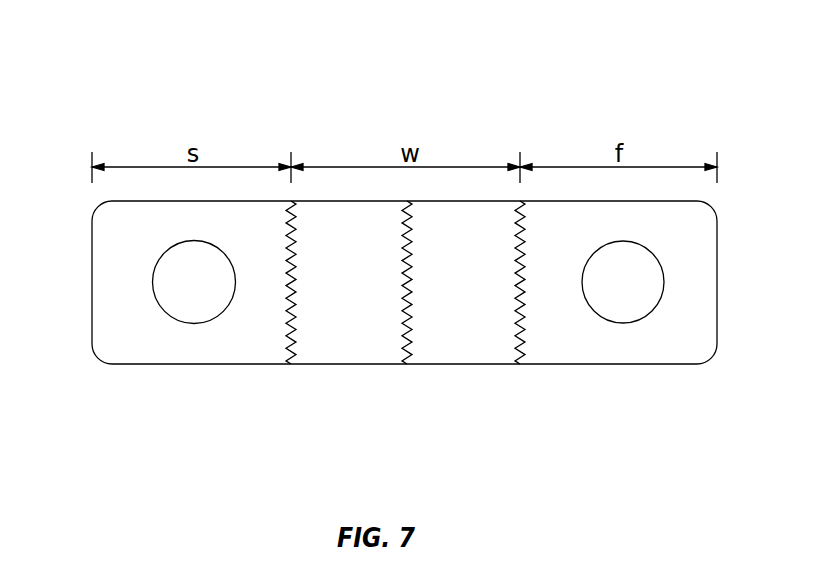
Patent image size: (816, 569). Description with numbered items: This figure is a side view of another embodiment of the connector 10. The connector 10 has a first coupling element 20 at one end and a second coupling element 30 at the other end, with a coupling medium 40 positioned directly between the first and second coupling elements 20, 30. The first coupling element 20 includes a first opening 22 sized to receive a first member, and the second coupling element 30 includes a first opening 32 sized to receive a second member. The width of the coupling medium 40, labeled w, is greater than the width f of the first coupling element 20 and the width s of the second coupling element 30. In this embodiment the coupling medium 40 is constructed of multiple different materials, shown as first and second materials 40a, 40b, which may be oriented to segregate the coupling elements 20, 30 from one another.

The connector 10 is at (523, 92).
The first coupling element 20 is at (688, 259).
The first opening 22 is at (642, 321).
The second coupling element 30 is at (122, 240).
The first opening 32 is at (172, 315).
The coupling medium 40 is at (408, 378).
The first material 40a is at (368, 352).
The second material 40b is at (448, 352).